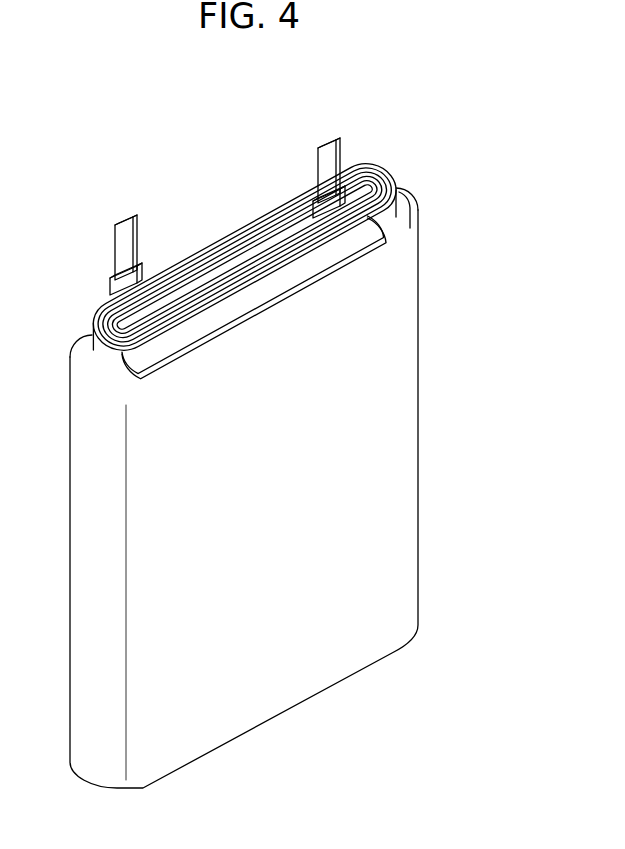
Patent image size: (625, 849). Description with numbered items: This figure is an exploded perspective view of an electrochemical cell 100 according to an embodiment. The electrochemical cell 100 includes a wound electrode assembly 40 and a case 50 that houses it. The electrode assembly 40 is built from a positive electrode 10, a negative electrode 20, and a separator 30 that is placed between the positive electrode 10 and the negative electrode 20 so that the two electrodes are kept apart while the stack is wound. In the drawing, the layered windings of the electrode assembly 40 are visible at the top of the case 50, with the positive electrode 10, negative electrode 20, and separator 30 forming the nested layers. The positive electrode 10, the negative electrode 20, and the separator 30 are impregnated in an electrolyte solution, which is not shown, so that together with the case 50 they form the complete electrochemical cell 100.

The electrochemical cell 100 is at (65, 131).
The positive electrode 10 is at (271, 243).
The negative electrode 20 is at (363, 180).
The separator 30 is at (384, 182).
The electrode assembly 40 is at (284, 192).
The case 50 is at (404, 430).